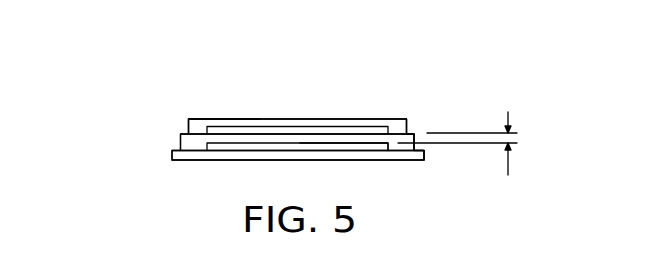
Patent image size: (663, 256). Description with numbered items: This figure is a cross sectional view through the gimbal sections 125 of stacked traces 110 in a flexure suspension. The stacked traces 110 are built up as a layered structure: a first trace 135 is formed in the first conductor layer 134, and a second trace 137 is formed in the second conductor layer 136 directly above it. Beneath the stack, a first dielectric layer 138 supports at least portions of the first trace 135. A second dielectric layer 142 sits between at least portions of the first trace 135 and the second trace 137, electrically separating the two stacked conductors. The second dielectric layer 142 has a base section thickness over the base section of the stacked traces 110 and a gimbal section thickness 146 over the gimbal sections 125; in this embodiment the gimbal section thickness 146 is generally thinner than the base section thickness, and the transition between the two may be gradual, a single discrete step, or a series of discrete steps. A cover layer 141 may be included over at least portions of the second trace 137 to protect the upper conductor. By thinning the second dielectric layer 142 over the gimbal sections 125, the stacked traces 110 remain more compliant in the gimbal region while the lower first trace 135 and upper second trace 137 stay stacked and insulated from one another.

The stacked traces 110 is at (353, 119).
The gimbal sections 125 is at (420, 117).
The first conductor layer 134 is at (210, 143).
The first trace 135 is at (355, 144).
The second conductor layer 136 is at (215, 119).
The second trace 137 is at (245, 119).
The first dielectric layer 138 is at (172, 160).
The cover layer 141 is at (187, 120).
The second dielectric layer 142 is at (180, 141).
The gimbal section thickness 146 is at (508, 112).